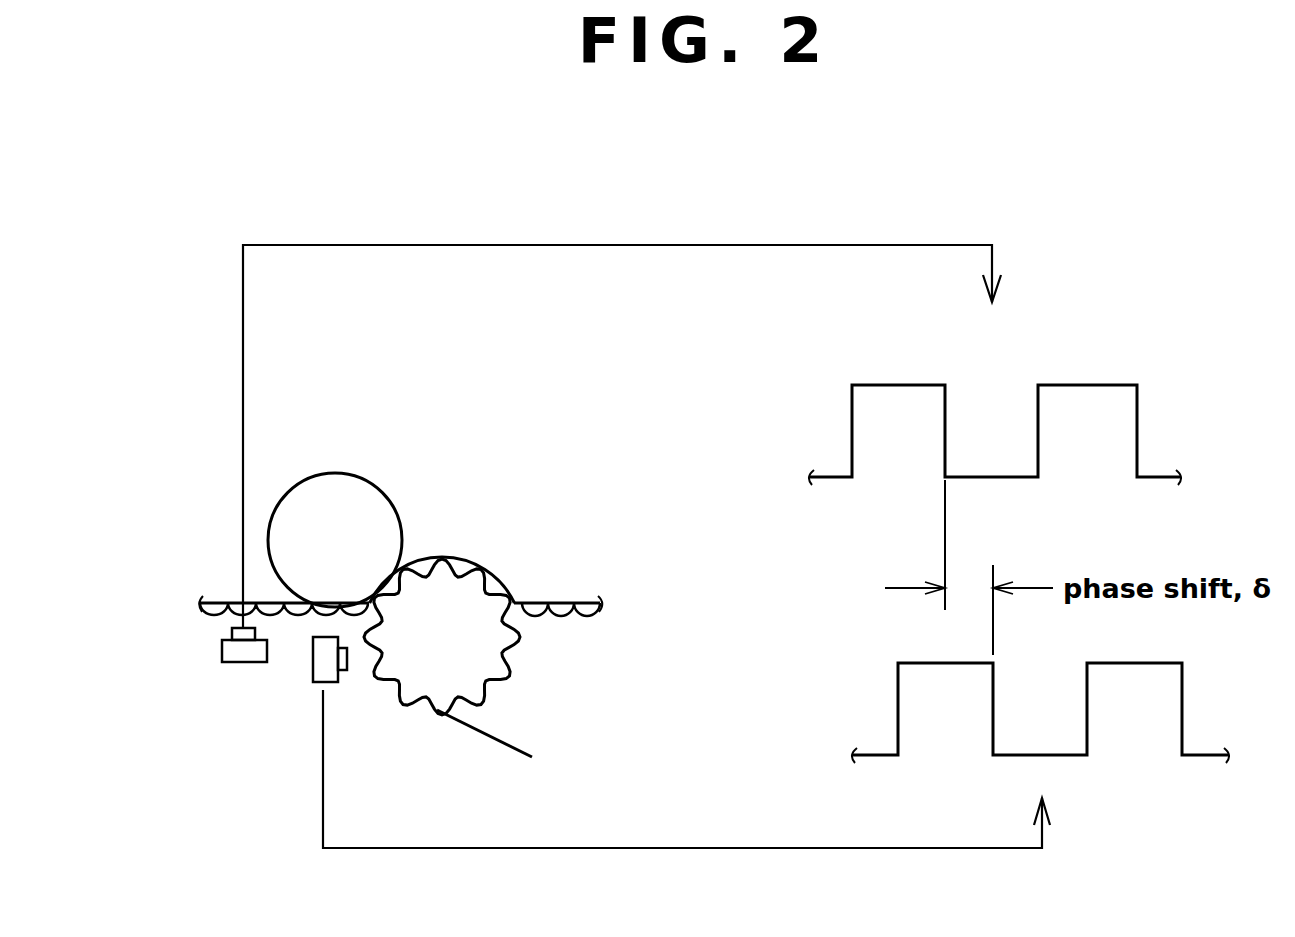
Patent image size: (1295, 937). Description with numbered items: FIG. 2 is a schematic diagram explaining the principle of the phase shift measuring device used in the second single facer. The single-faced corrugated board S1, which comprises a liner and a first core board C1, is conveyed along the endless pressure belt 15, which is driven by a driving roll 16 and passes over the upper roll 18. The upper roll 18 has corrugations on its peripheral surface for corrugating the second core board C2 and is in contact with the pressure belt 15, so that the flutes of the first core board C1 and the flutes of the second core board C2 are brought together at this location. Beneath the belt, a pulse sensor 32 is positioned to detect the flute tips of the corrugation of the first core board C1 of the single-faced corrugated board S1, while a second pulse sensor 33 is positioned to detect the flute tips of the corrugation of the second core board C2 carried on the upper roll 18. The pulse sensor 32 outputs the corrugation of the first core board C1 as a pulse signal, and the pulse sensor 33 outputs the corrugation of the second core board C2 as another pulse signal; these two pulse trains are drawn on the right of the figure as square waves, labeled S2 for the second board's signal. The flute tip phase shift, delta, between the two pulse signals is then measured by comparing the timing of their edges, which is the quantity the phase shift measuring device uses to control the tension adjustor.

The endless pressure belt 15 is at (337, 472).
The driving roll 16 is at (315, 490).
The upper roll 18 is at (487, 663).
The pulse sensor 32 is at (244, 662).
The pulse sensor 33 is at (313, 665).
The first core board C1 is at (215, 612).
The second core board C2 is at (477, 737).
The single-faced corrugated board S1 is at (222, 598).
The second signal S2 is at (525, 600).